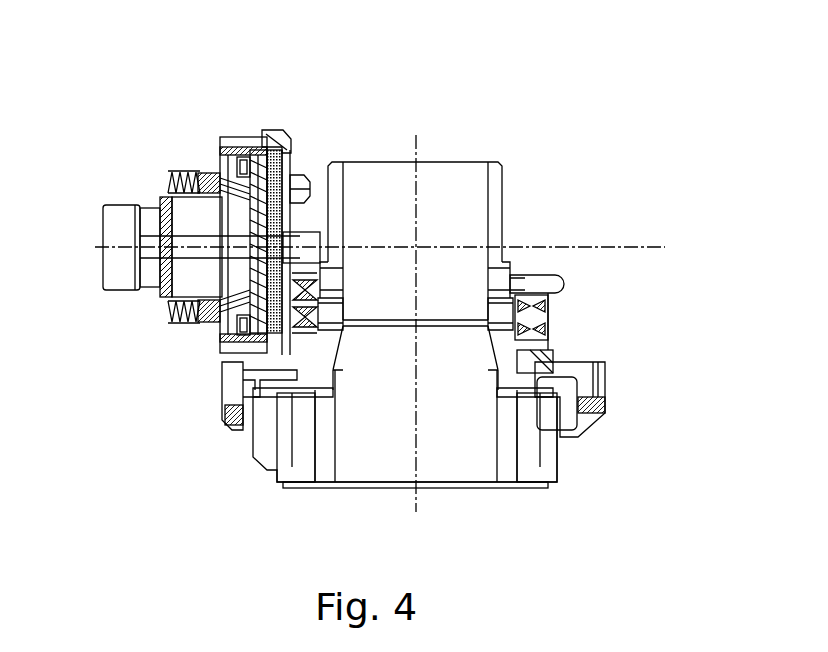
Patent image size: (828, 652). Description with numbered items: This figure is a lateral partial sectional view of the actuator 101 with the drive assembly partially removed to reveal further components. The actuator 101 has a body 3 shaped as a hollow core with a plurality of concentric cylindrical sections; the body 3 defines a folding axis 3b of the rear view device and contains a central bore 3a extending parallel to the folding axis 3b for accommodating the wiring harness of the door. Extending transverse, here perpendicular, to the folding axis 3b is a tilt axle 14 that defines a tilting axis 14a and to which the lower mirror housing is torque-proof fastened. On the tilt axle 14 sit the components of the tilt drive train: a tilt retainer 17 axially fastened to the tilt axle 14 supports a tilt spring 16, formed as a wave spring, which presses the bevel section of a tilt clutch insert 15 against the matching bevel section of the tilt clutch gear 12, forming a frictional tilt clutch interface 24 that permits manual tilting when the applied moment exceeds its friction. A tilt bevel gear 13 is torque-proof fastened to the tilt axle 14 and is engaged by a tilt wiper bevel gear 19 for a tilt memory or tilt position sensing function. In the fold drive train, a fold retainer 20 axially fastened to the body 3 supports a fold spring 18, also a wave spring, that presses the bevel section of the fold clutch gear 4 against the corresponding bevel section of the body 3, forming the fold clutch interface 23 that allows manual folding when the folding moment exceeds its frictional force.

The actuator 101 is at (533, 137).
The body 3 is at (390, 490).
The central bore 3a is at (462, 488).
The folding axis 3b is at (417, 160).
The fold clutch gear 4 is at (590, 427).
The tilt clutch gear 12 is at (293, 160).
The tilt bevel gear 13 is at (265, 135).
The tilt axle 14 is at (118, 273).
The tilting axis 14a is at (640, 240).
The tilt clutch insert 15 is at (218, 168).
The tilt spring 16 is at (188, 165).
The tilt retainer 17 is at (170, 165).
The fold spring 18 is at (548, 302).
The tilt wiper bevel gear 19 is at (553, 355).
The fold retainer 20 is at (530, 273).
The fold clutch interface 23 is at (225, 433).
The tilt clutch interface 24 is at (213, 318).